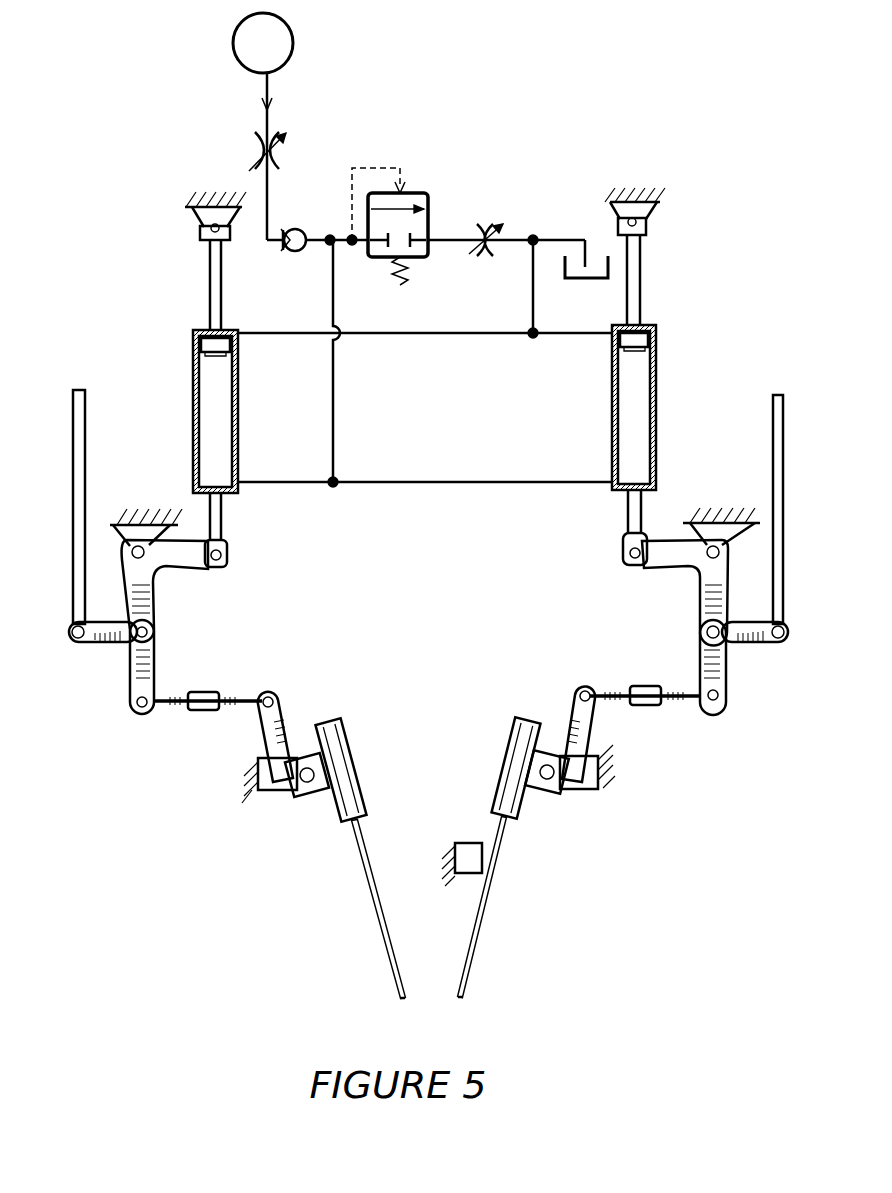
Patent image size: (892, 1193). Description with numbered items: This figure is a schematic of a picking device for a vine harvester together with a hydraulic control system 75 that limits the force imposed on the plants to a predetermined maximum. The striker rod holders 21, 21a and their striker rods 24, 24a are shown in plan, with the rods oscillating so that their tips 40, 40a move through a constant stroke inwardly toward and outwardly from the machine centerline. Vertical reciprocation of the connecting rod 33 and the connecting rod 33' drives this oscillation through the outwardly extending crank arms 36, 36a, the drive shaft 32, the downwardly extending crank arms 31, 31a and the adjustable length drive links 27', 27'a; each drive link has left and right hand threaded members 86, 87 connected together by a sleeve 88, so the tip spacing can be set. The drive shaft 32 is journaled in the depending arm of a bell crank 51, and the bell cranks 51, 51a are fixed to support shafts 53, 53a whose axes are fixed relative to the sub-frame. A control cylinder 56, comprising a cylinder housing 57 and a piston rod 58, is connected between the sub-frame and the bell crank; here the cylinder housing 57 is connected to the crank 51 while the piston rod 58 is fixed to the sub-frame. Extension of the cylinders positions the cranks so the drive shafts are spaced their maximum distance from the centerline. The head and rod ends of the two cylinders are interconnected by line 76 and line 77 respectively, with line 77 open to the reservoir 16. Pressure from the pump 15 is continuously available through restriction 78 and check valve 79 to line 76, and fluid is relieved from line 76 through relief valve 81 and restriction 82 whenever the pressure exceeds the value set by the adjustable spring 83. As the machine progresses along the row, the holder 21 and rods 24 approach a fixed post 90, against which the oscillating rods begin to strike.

The pump 15 is at (293, 37).
The reservoir 16 is at (570, 282).
The striker rod holder 21 is at (547, 790).
The striker rod holder 21a is at (302, 782).
The striker rods 24 is at (480, 927).
The striker rods 24a is at (378, 927).
The adjustable length drive link 27' is at (656, 703).
The adjustable length drive link 27'a is at (204, 727).
The crank arms 31 is at (727, 680).
The crank arms 31a is at (152, 680).
The drive shaft 32 is at (706, 632).
The connecting rod 33 is at (754, 509).
The connecting rod 33' is at (110, 507).
The crank arms 36 is at (755, 623).
The crank arms 36a is at (92, 642).
The tips 40 is at (459, 999).
The tips 40a is at (404, 1000).
The bell crank 51 is at (697, 563).
The bell crank 51a is at (165, 561).
The support shaft 53 is at (712, 545).
The support shaft 53a is at (138, 545).
The control cylinder 56 is at (679, 376).
The cylinder housing 57 is at (666, 355).
The piston rod 58 is at (641, 272).
The hydraulic control system 75 is at (425, 412).
The line 76 is at (425, 462).
The line 77 is at (418, 337).
The restriction 78 is at (281, 160).
The check valve 79 is at (290, 252).
The relief valve 81 is at (418, 193).
The restriction 82 is at (488, 256).
The adjustable spring 83 is at (402, 282).
The left hand threaded member 86 is at (615, 700).
The right hand threaded member 87 is at (678, 700).
The sleeve 88 is at (648, 707).
The fixed post 90 is at (465, 843).